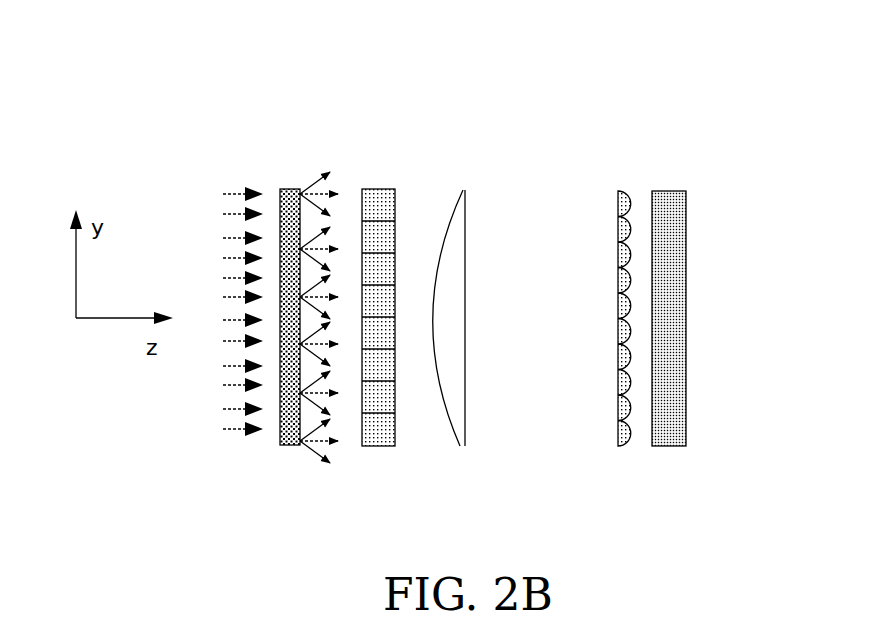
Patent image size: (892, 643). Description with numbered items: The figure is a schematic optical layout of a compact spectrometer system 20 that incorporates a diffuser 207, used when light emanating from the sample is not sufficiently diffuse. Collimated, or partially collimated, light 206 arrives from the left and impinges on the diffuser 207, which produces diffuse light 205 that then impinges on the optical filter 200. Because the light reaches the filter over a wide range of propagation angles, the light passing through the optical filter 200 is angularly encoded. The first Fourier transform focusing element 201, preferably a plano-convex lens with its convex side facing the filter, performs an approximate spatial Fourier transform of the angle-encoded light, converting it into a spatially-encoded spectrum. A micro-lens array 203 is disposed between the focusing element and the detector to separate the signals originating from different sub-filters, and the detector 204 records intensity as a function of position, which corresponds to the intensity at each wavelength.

The compact spectrometer system 20 is at (133, 124).
The optical filter 200 is at (368, 455).
The first Fourier transform focusing element 201 is at (468, 430).
The micro-lens array 203 is at (604, 407).
The detector 204 is at (688, 296).
The diffuse light 205 is at (335, 178).
The collimated light 206 is at (242, 178).
The diffuser 207 is at (287, 450).